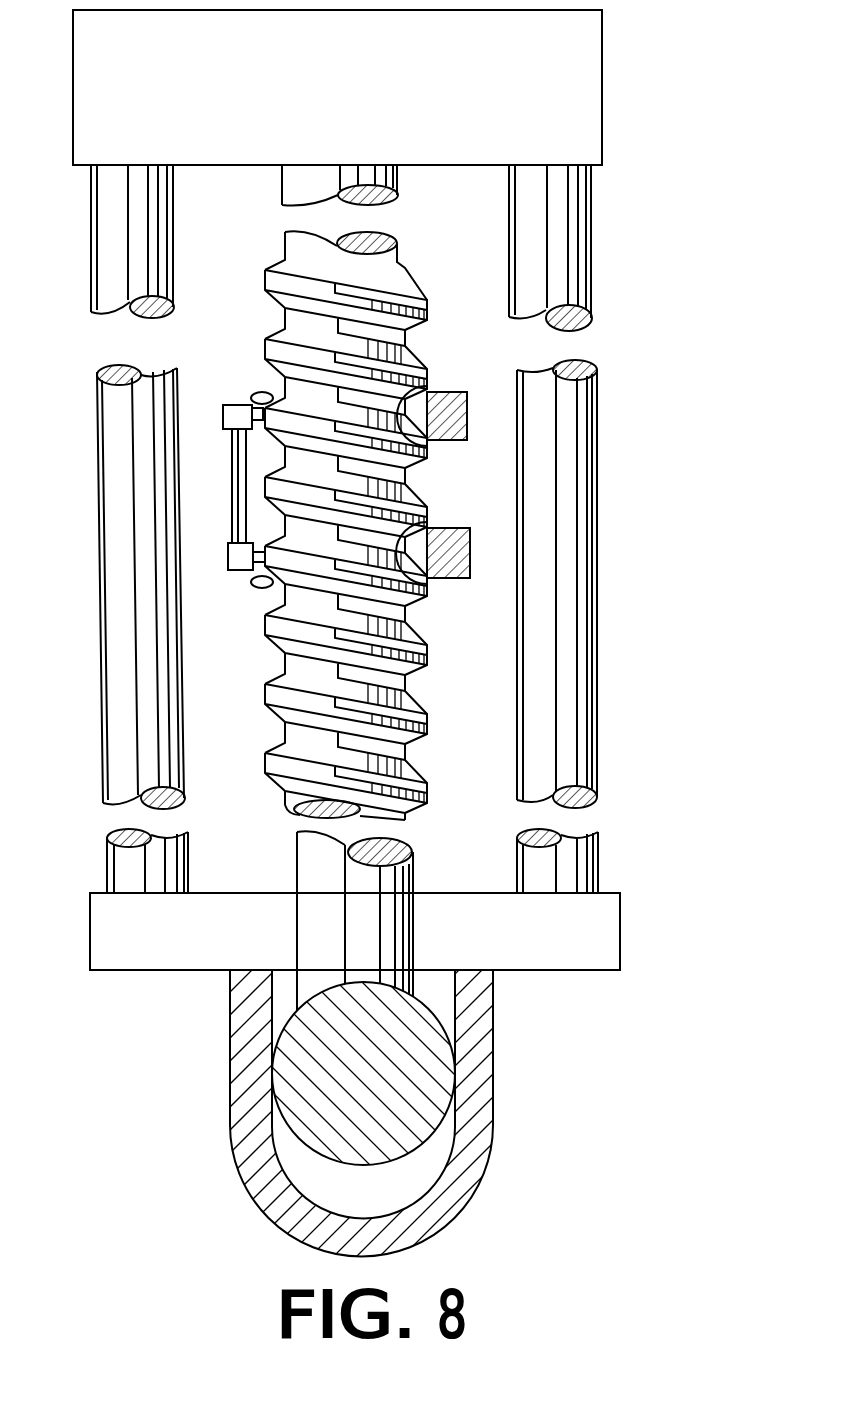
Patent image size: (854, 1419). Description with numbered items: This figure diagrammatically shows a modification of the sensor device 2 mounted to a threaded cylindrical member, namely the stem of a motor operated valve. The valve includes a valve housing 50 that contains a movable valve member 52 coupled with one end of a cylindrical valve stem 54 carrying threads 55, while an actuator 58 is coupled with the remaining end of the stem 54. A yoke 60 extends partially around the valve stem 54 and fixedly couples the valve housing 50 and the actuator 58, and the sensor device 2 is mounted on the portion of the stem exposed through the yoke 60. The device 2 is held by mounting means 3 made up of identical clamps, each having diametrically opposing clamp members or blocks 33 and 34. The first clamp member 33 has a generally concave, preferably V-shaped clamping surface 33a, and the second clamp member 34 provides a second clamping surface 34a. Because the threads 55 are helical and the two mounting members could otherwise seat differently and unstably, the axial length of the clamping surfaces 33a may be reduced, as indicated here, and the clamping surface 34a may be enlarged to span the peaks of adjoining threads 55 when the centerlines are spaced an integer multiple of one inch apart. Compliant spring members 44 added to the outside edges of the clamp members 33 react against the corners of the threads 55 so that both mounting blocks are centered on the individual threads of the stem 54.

The sensor device 2 is at (225, 476).
The mounting means 3 is at (442, 443).
The clamp member 33 is at (228, 407).
The clamping surface 33a is at (228, 432).
The second clamp member 34 is at (440, 392).
The second clamping surface 34a is at (405, 352).
The compliant spring members 44 is at (262, 392).
The valve housing 50 is at (498, 1056).
The movable valve member 52 is at (300, 1083).
The valve stem 54 is at (290, 797).
The threads 55 is at (422, 310).
The actuator 58 is at (606, 88).
The yoke 60 is at (98, 525).